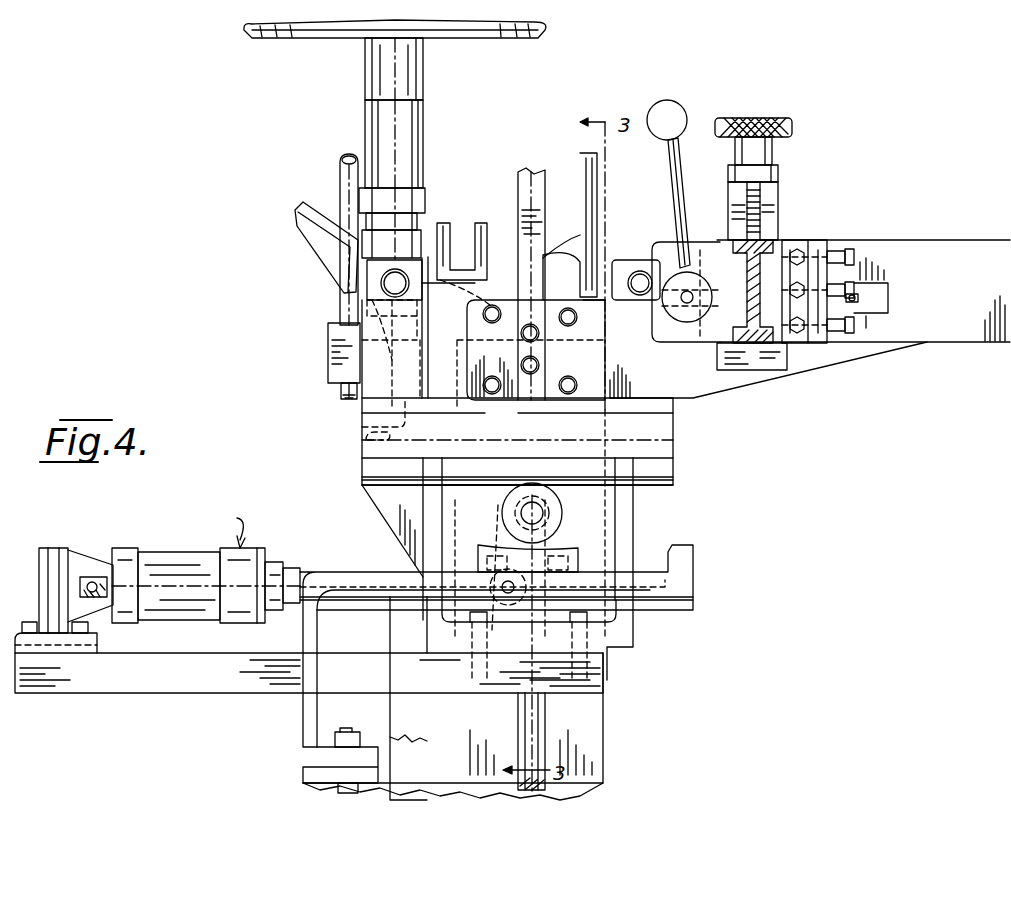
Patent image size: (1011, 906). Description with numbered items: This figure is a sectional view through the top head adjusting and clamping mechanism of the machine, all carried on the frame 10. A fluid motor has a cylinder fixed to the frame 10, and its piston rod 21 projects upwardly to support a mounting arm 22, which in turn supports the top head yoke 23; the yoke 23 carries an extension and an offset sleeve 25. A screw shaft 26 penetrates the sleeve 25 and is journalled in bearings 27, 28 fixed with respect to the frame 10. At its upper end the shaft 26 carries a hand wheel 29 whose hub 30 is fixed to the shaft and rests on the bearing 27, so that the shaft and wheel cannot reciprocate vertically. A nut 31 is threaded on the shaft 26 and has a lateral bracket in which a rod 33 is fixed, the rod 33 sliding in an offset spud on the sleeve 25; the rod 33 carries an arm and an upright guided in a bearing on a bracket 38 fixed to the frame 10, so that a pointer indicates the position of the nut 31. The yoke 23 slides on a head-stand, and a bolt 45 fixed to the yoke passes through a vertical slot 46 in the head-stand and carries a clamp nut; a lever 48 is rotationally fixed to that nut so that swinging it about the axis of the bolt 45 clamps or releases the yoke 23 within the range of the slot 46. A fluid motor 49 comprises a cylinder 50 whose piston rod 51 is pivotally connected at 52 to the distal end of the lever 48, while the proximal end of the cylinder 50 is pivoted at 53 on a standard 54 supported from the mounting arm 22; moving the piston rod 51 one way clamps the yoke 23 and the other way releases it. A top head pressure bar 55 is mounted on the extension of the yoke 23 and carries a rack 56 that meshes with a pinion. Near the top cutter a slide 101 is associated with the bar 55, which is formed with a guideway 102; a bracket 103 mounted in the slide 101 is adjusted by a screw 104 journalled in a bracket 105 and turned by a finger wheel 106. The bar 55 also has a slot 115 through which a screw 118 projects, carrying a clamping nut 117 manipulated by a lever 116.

The frame 10 is at (614, 746).
The piston rod 21 is at (545, 732).
The mounting arm 22 is at (238, 694).
The top head yoke 23 is at (672, 447).
The offset sleeve 25 is at (328, 356).
The screw shaft 26 is at (375, 438).
The bearing 27 is at (365, 128).
The bearing 28 is at (420, 232).
The hand wheel 29 is at (512, 38).
The hub 30 is at (423, 80).
The nut 31 is at (368, 412).
The rod 33 is at (340, 302).
The bracket 38 is at (296, 250).
The bolt 45 is at (545, 513).
The vertical slot 46 is at (540, 630).
The lever 48 is at (500, 528).
The fluid motor 49 is at (234, 524).
The cylinder 50 is at (200, 548).
The piston rod 51 is at (350, 570).
The pivotal connection 52 is at (496, 618).
The pivotal mounting 53 is at (92, 582).
The standard 54 is at (55, 548).
The top head pressure bar 55 is at (962, 240).
The rack 56 is at (518, 184).
The slide 101 is at (815, 240).
The guideway 102 is at (880, 312).
The bracket 103 is at (760, 250).
The screw 104 is at (760, 215).
The bracket 105 is at (778, 172).
The finger wheel 106 is at (792, 128).
The slot 115 is at (853, 302).
The lever 116 is at (681, 179).
The clamping nut 117 is at (670, 310).
The screw 118 is at (687, 305).